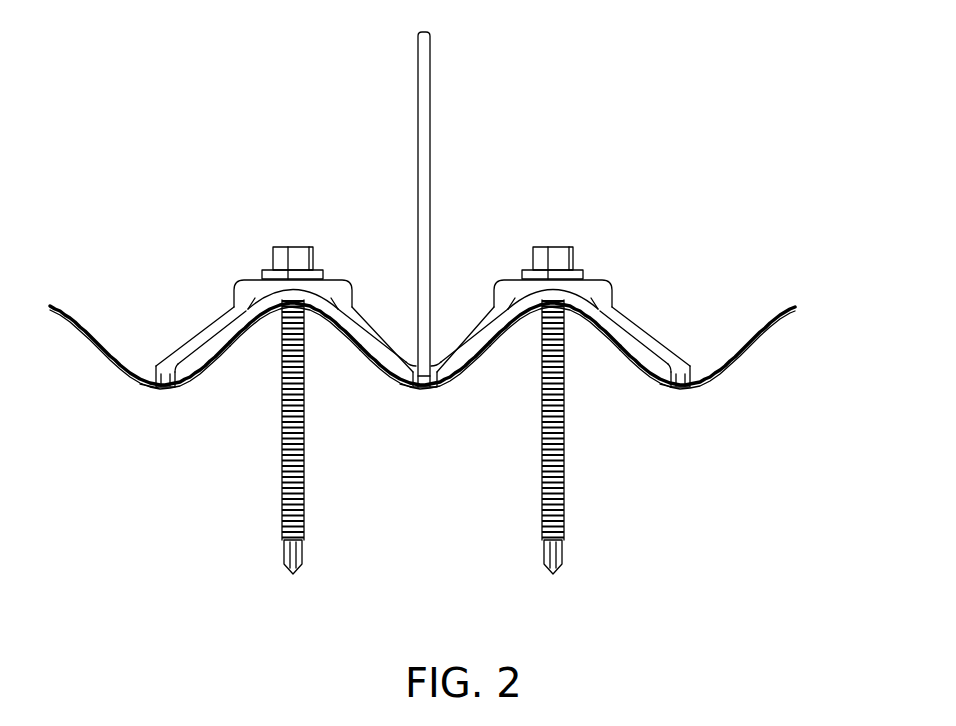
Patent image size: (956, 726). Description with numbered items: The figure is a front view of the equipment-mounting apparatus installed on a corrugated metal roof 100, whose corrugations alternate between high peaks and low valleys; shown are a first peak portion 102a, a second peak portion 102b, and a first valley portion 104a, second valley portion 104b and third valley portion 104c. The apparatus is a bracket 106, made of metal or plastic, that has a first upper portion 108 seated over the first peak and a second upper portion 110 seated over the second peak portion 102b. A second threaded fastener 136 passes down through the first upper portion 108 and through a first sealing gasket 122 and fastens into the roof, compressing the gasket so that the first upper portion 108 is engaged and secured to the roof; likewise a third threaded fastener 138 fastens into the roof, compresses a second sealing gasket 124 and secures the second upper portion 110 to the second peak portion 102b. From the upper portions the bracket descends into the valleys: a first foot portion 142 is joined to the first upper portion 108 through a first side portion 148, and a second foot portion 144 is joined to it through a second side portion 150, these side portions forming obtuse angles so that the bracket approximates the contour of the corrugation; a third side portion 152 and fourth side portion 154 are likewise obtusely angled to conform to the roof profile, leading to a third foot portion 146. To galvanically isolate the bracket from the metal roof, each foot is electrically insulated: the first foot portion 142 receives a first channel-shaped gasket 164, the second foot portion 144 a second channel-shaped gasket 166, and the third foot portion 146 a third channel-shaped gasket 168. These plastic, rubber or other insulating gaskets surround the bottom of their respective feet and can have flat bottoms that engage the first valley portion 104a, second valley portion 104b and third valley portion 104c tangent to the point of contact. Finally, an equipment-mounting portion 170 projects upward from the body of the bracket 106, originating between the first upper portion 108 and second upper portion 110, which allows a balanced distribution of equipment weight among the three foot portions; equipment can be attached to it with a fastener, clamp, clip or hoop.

The corrugated metal roof 100 is at (430, 392).
The first peak portion 102a is at (272, 332).
The second peak portion 102b is at (532, 315).
The first valley portion 104a is at (160, 388).
The second valley portion 104b is at (422, 390).
The third valley portion 104c is at (680, 390).
The bracket 106 is at (408, 209).
The first upper portion 108 is at (299, 369).
The second upper portion 110 is at (578, 369).
The first sealing gasket 122 is at (250, 281).
The second sealing gasket 124 is at (512, 280).
The second threaded fastener 136 is at (306, 247).
The third threaded fastener 138 is at (557, 247).
The first foot portion 142 is at (165, 368).
The second foot portion 144 is at (427, 365).
The third foot portion 146 is at (683, 370).
The first side portion 148 is at (213, 320).
The second side portion 150 is at (373, 327).
The third side portion 152 is at (487, 317).
The fourth side portion 154 is at (650, 338).
The first channel-shaped gasket 164 is at (152, 376).
The second channel-shaped gasket 166 is at (405, 373).
The third channel-shaped gasket 168 is at (676, 373).
The equipment-mounting portion 170 is at (418, 102).